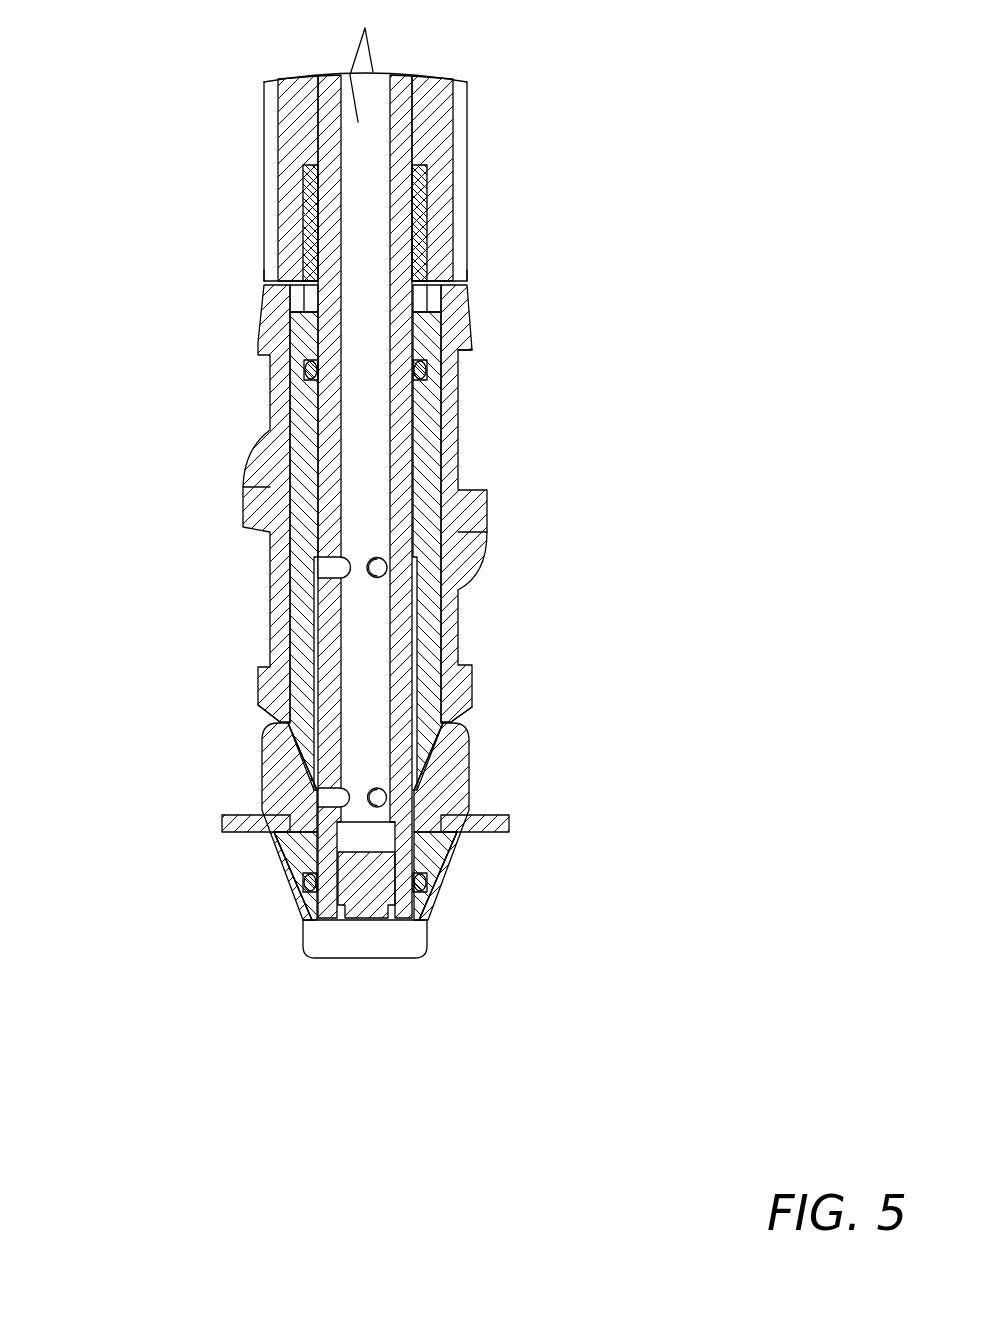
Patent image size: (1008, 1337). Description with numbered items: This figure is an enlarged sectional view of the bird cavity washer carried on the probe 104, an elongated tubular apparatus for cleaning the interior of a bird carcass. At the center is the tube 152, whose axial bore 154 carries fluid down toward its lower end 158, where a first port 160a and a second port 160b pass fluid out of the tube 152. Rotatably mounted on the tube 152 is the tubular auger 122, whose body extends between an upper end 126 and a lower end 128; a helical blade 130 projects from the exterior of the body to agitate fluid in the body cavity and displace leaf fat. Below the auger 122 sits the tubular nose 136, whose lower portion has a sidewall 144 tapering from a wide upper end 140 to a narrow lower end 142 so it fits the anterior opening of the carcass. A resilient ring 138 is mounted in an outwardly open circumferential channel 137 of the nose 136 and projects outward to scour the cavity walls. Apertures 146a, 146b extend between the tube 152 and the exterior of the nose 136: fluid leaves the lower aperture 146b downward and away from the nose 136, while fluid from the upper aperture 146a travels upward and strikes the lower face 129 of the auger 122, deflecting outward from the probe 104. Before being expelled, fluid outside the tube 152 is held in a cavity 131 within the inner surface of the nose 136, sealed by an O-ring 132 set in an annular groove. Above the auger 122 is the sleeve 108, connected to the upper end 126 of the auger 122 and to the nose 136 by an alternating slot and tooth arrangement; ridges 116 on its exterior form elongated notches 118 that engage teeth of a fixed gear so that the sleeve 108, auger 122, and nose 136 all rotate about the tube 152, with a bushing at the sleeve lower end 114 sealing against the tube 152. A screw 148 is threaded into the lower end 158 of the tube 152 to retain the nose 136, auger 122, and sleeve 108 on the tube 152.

The probe 104 is at (140, 280).
The sleeve 108 is at (433, 128).
The lower end 114 is at (468, 270).
The ridges 116 is at (467, 165).
The elongated notches 118 is at (455, 218).
The auger 122 is at (470, 352).
The upper end 126 is at (457, 325).
The lower end 128 is at (465, 672).
The lower face 129 is at (278, 715).
The helical blade 130 is at (263, 467).
The cavity 131 is at (413, 655).
The O-ring 132 is at (305, 368).
The nose 136 is at (460, 788).
The circumferential channel 137 is at (293, 828).
The resilient ring 138 is at (507, 822).
The upper end 140 is at (467, 740).
The lower end 142 is at (427, 920).
The sidewall 144 is at (465, 860).
The upper aperture 146a is at (290, 742).
The lower aperture 146b is at (287, 872).
The screw 148 is at (410, 938).
The tube 152 is at (329, 202).
The axial bore 154 is at (358, 170).
The lower end 158 is at (320, 787).
The first port 160a is at (378, 568).
The second port 160b is at (325, 800).